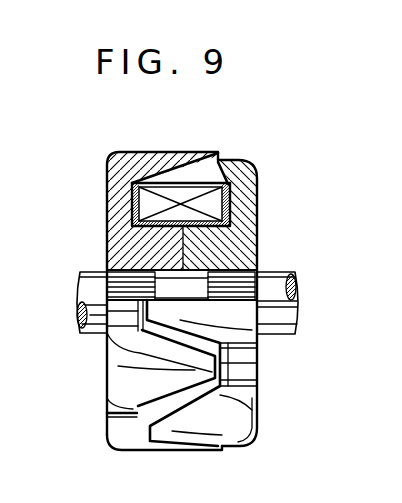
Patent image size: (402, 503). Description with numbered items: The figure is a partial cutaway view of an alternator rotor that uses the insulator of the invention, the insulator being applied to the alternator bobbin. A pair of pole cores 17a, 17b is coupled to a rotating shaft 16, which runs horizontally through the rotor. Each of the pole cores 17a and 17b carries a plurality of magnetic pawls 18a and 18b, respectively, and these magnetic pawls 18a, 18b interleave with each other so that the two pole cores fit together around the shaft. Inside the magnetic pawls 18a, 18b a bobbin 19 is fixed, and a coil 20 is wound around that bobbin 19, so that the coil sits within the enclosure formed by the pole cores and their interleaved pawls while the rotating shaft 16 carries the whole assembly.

The rotating shaft 16 is at (273, 324).
The pole core 17a is at (116, 243).
The pole core 17b is at (240, 256).
The magnetic pawls 18a is at (176, 156).
The magnetic pawls 18b is at (240, 160).
The bobbin 19 is at (138, 195).
The coil 20 is at (212, 204).